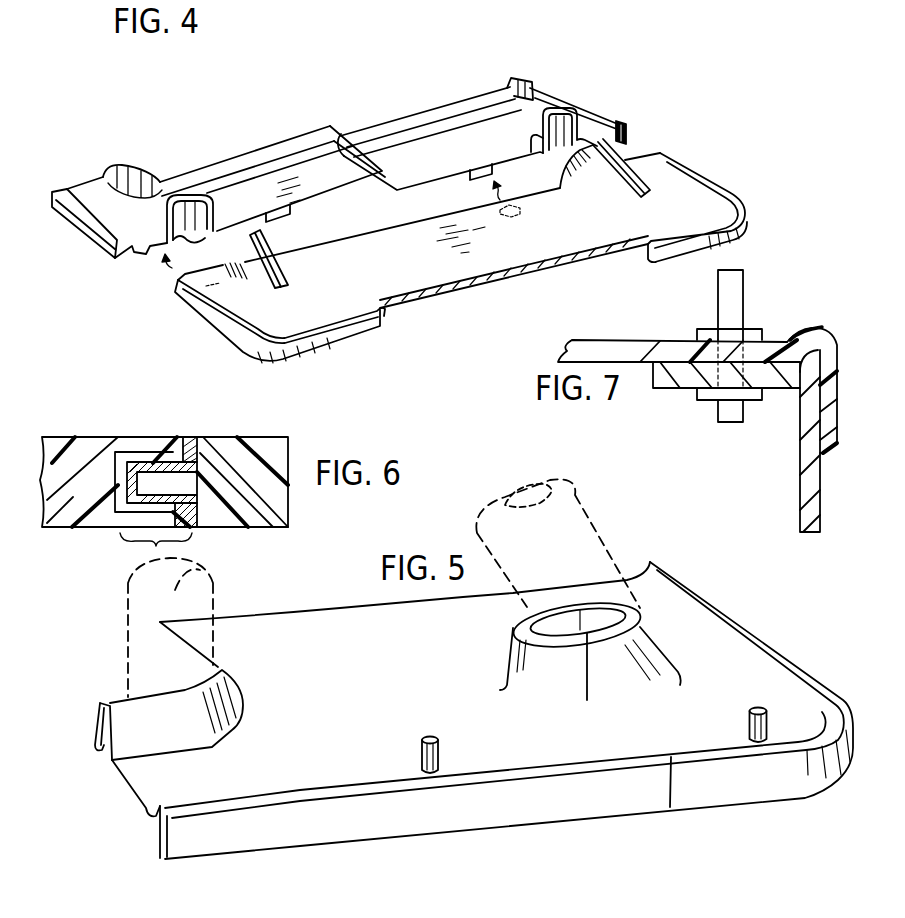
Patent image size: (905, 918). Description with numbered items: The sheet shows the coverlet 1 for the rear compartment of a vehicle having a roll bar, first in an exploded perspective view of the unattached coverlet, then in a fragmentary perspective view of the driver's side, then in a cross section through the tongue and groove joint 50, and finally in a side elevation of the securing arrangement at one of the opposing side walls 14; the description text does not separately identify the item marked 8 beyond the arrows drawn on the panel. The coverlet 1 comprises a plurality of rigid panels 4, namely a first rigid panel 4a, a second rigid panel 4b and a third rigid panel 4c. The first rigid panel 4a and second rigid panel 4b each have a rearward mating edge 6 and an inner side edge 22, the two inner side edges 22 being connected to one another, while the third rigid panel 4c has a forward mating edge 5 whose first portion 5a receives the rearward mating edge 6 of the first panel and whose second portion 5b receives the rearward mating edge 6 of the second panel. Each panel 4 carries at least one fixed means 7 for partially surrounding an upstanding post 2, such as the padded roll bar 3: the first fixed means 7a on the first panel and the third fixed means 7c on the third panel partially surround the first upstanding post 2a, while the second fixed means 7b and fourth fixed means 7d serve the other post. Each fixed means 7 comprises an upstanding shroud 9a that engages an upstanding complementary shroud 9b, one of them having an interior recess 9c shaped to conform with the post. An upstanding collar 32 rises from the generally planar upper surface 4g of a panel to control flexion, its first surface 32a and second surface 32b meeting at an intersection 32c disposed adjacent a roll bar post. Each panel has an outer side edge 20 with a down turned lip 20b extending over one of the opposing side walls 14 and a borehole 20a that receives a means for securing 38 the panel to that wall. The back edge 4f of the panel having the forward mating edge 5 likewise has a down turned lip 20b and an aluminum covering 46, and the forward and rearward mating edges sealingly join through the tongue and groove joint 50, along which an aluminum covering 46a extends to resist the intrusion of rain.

In FIG. 4, the coverlet 1 is at (688, 77).
In FIG. 5, the upstanding post 2 is at (570, 493).
In FIG. 5, the first upstanding post 2a is at (597, 537).
In FIG. 5, the padded roll bar 3 is at (213, 587).
In FIG. 7, the rigid panel 4 is at (637, 340).
In FIG. 4, the first rigid panel 4a is at (115, 213).
In FIG. 5, the first rigid panel 4a is at (473, 830).
In FIG. 4, the second rigid panel 4b is at (592, 100).
In FIG. 4, the third rigid panel 4c is at (700, 200).
In FIG. 5, the third rigid panel 4c is at (787, 657).
In FIG. 4, the back edge 4f is at (357, 348).
In FIG. 4, the generally planar upper surface 4g is at (343, 196).
In FIG. 5, the generally planar upper surface 4g is at (370, 723).
In FIG. 4, the forward mating edge 5 is at (383, 232).
In FIG. 6, the forward mating edge 5 is at (190, 437).
In FIG. 4, the first portion of the forward mating edge 5a is at (387, 243).
In FIG. 4, the second portion of the forward mating edge 5b is at (533, 202).
In FIG. 4, the rearward mating edge 6 is at (300, 213).
In FIG. 6, the rearward mating edge 6 is at (175, 440).
In FIG. 5, the rearward mating edge 6 is at (587, 740).
In FIG. 4, the fixed means for partially surrounding an upstanding post 7 is at (255, 228).
In FIG. 5, the fixed means for partially surrounding an upstanding post 7 is at (507, 653).
In FIG. 4, the first fixed means 7a is at (210, 198).
In FIG. 5, the first fixed means 7a is at (507, 640).
In FIG. 4, the second fixed means 7b is at (585, 75).
In FIG. 4, the third fixed means 7c is at (323, 262).
In FIG. 4, the fourth fixed means 7d is at (583, 193).
In FIG. 5, the pin 8 is at (438, 660).
In FIG. 4, the upstanding shroud 9a is at (167, 212).
In FIG. 4, the upstanding complementary shroud 9b is at (257, 277).
In FIG. 4, the interior recess 9c is at (213, 254).
In FIG. 7, the opposing side wall 14 is at (820, 492).
In FIG. 4, the outer side edge 20 is at (63, 213).
In FIG. 7, the outer side edge 20 is at (838, 394).
In FIG. 5, the outer side edge 20 is at (610, 817).
In FIG. 7, the borehole 20a is at (776, 332).
In FIG. 4, the down turned lip 20b is at (100, 253).
In FIG. 7, the down turned lip 20b is at (843, 362).
In FIG. 5, the down turned lip 20b is at (397, 830).
In FIG. 4, the inner side edge 22 is at (337, 143).
In FIG. 5, the upstanding collar 32 is at (230, 670).
In FIG. 4, the first surface 32a is at (213, 167).
In FIG. 5, the first surface 32a is at (220, 673).
In FIG. 4, the second surface 32b is at (103, 173).
In FIG. 5, the second surface 32b is at (113, 703).
In FIG. 4, the intersection 32c is at (147, 180).
In FIG. 5, the intersection 32c is at (233, 673).
In FIG. 7, the means for securing 38 is at (752, 318).
In FIG. 4, the aluminum covering 46 is at (532, 265).
In FIG. 6, the aluminum covering 46a is at (185, 437).
In FIG. 6, the tongue and groove joint 50 is at (145, 552).